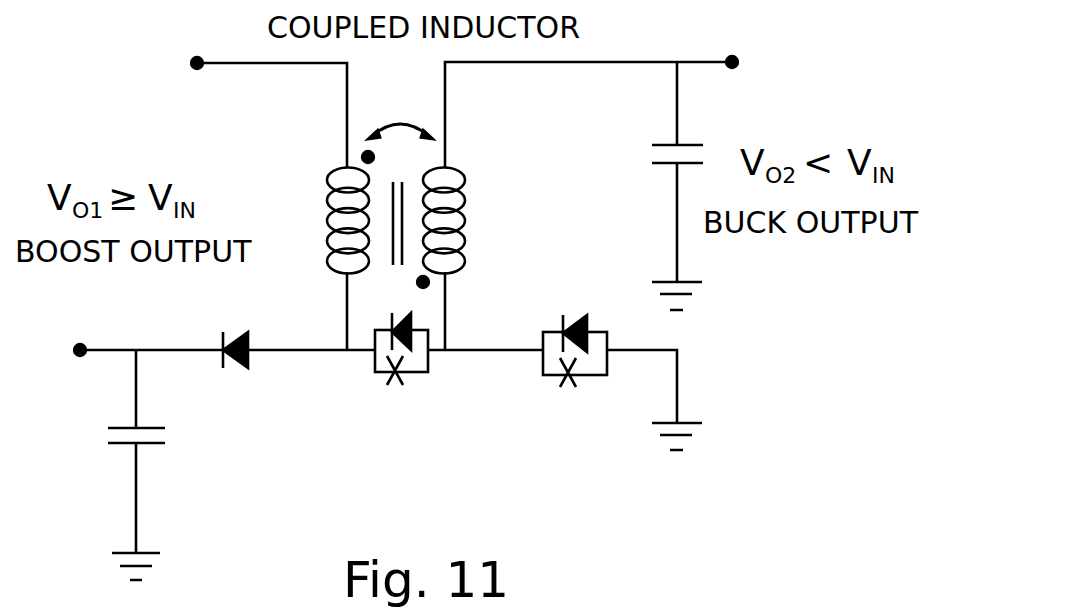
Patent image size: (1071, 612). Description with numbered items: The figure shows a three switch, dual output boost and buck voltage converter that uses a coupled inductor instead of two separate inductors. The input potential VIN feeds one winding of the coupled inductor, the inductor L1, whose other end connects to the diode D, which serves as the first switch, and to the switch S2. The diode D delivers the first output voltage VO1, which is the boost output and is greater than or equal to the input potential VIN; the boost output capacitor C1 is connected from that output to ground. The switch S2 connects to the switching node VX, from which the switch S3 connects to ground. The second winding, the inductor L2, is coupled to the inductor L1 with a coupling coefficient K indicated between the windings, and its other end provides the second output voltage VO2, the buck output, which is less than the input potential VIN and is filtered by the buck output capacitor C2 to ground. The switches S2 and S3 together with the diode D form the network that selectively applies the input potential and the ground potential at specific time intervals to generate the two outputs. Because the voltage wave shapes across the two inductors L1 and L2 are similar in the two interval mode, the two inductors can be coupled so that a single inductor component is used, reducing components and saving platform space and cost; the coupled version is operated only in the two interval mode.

The input potential VIN is at (157, 67).
The first output voltage VO1 is at (103, 327).
The second output voltage VO2 is at (743, 27).
The switching node VX is at (485, 332).
The coupling coefficient K is at (400, 111).
The boost output capacitor C1 is at (161, 462).
The buck output capacitor C2 is at (650, 164).
The diode D is at (249, 323).
The switch S2 is at (401, 379).
The switch S3 is at (575, 380).
The inductor L1 is at (348, 221).
The inductor L2 is at (444, 221).